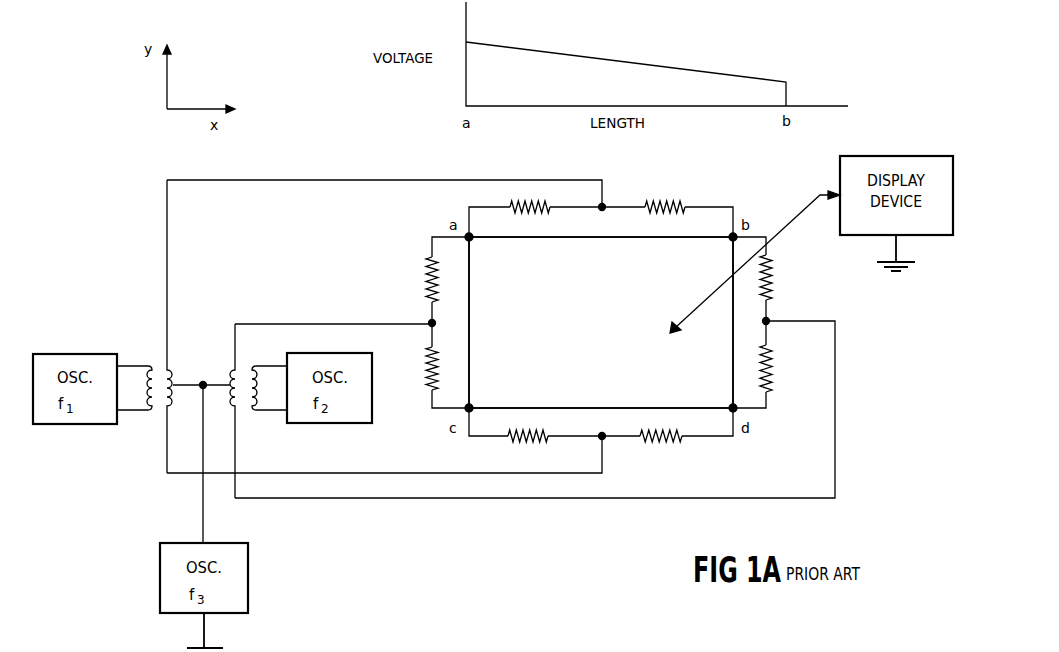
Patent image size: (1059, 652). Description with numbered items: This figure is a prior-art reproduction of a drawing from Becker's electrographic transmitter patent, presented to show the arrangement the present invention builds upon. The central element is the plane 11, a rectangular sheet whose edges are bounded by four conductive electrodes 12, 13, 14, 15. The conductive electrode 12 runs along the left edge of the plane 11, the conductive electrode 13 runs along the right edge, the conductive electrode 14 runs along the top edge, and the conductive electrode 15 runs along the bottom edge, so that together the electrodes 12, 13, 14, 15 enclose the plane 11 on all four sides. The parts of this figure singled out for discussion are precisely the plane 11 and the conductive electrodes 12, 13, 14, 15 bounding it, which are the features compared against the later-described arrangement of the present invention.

The plane 11 is at (700, 383).
The conductive electrode 12 is at (469, 312).
The conductive electrode 13 is at (733, 330).
The conductive electrode 14 is at (600, 237).
The conductive electrode 15 is at (580, 408).